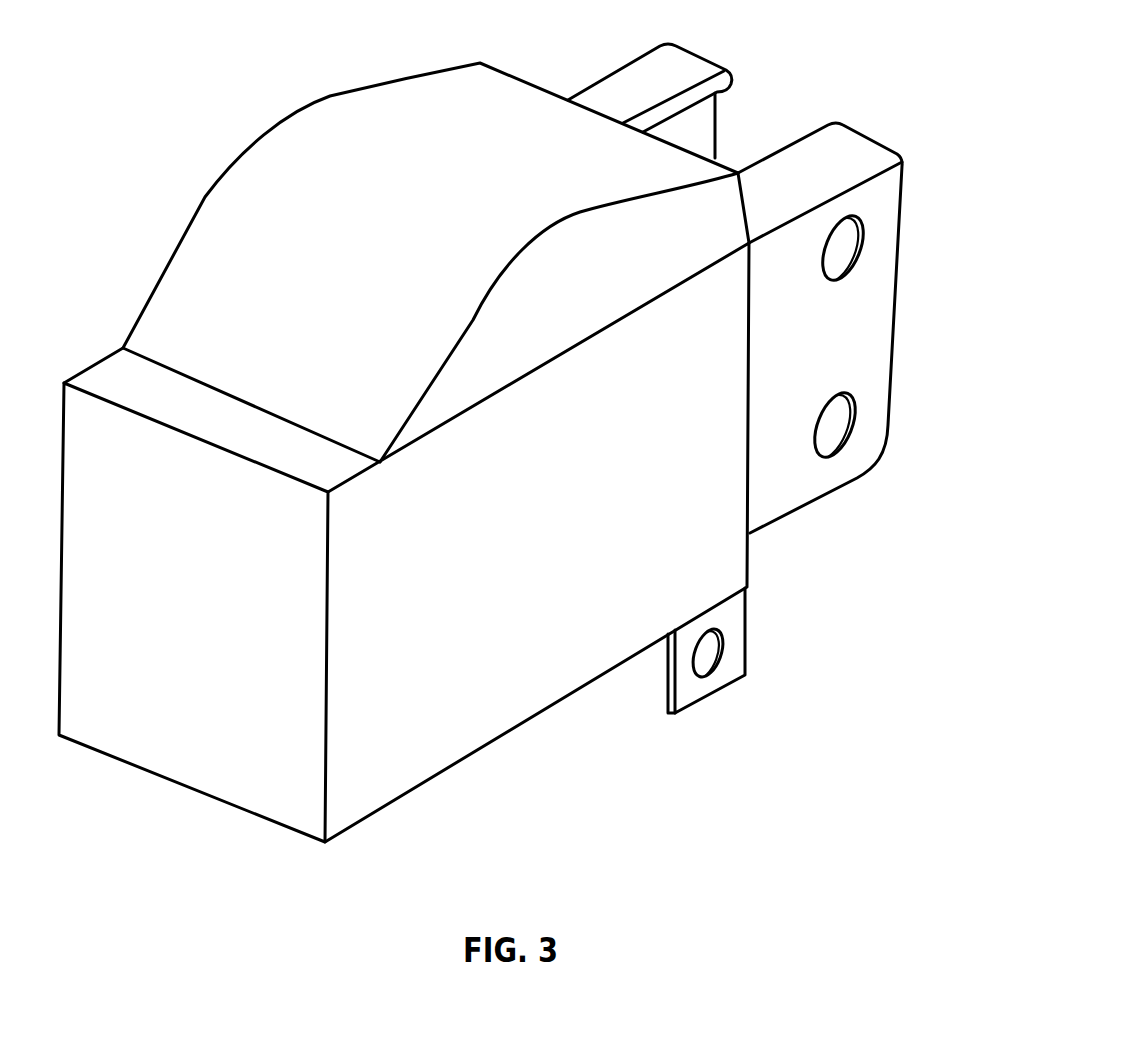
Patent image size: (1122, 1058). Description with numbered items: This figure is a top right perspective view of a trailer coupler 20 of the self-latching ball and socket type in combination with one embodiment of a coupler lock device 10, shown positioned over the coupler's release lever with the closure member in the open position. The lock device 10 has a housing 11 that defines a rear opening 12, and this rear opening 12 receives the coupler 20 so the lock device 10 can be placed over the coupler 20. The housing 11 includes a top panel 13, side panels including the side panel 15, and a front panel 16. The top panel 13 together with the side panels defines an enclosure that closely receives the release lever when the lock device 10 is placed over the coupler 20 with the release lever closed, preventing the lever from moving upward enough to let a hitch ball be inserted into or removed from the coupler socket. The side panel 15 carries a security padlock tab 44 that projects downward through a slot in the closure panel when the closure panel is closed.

The coupler lock device 10 is at (569, 443).
The housing 11 is at (392, 452).
The rear opening 12 is at (730, 157).
The top panel 13 is at (376, 256).
The side panel 15 is at (562, 615).
The front panel 16 is at (206, 611).
The coupler 20 is at (897, 370).
The security padlock tab 44 is at (732, 665).